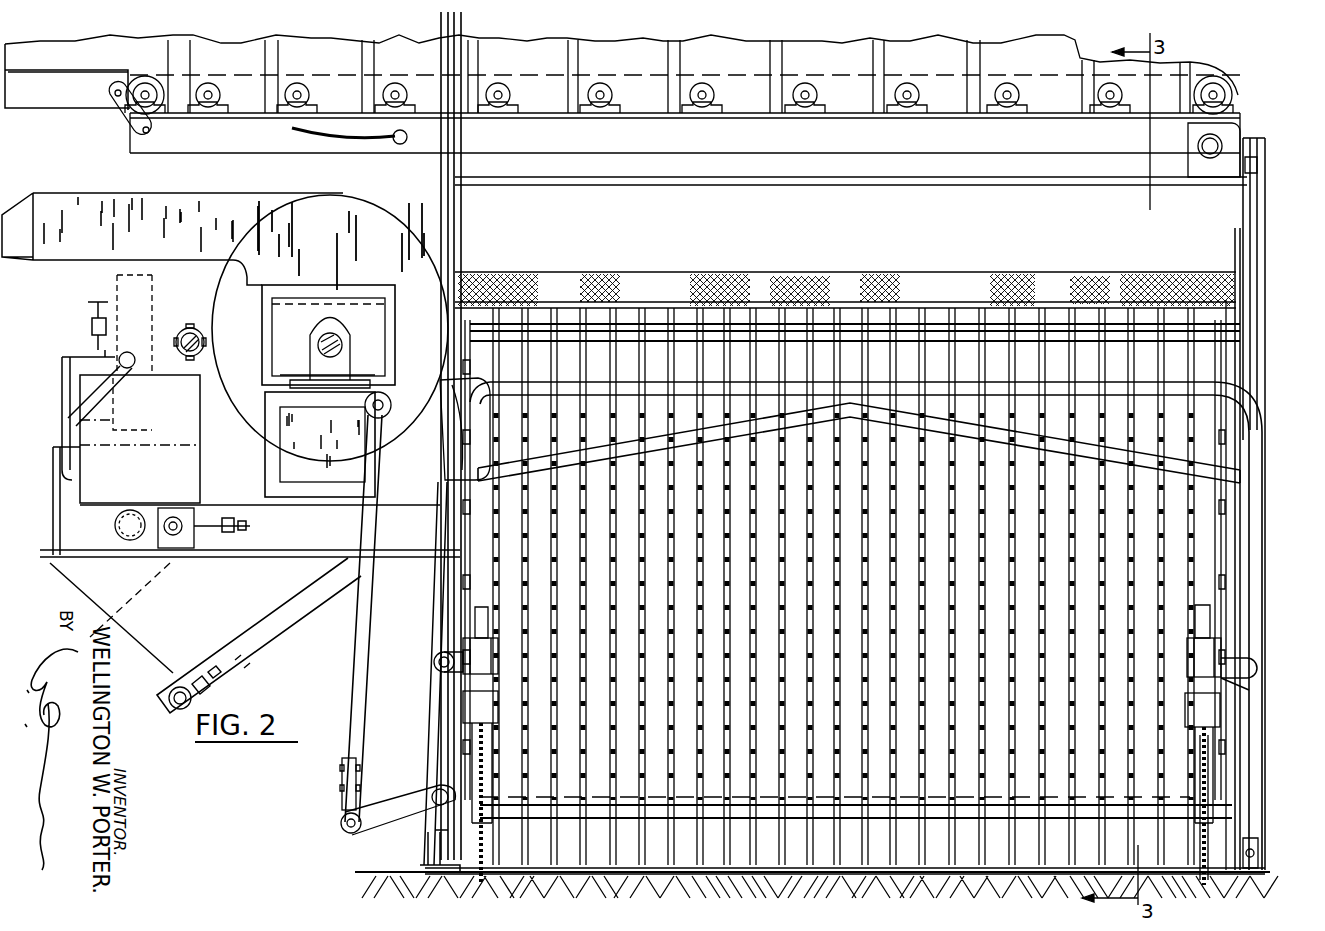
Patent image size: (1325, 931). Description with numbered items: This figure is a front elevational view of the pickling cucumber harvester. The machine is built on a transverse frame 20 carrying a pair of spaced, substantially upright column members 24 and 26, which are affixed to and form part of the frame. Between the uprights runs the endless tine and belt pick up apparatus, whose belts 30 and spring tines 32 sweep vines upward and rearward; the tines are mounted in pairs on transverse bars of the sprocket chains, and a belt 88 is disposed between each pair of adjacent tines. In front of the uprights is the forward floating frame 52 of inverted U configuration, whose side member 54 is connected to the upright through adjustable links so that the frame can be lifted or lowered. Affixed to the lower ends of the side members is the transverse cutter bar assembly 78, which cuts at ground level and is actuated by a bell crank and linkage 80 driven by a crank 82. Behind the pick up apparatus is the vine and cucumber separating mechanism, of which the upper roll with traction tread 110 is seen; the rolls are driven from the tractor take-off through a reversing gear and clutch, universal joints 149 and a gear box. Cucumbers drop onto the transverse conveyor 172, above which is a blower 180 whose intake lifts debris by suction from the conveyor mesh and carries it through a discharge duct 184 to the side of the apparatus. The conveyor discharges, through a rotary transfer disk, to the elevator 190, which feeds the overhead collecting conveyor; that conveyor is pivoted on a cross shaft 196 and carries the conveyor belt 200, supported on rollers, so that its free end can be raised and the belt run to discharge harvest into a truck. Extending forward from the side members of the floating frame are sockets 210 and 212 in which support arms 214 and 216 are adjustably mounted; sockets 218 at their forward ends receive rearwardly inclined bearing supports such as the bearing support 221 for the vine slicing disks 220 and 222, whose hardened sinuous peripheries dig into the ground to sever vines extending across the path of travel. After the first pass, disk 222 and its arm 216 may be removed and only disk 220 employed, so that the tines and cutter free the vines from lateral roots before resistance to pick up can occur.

The transverse frame 20 is at (283, 538).
The upright column member 24 is at (1260, 206).
The upright column member 26 is at (462, 195).
The belts 30 is at (680, 325).
The spring tines 32 is at (758, 822).
The forward floating frame 52 is at (1238, 402).
The side member 54 is at (1254, 552).
The transverse cutter bar assembly 78 is at (620, 868).
The bell crank and linkage 80 is at (428, 846).
The crank 82 is at (400, 265).
The belt 88 is at (1140, 576).
The upper roll with traction tread 110 is at (798, 292).
The universal joints 149 is at (183, 330).
The transverse conveyor 172 is at (388, 548).
The blower 180 is at (306, 206).
The discharge duct 184 is at (145, 202).
The elevator 190 is at (252, 655).
The cross shaft 196 is at (1216, 140).
The conveyor belt 200 is at (318, 78).
The socket 210 is at (1258, 666).
The socket 212 is at (432, 656).
The support arm 214 is at (1226, 672).
The support arm 216 is at (440, 665).
The sockets 218 is at (498, 670).
The vine slicing disk 220 is at (1208, 766).
The bearing support 221 is at (345, 757).
The vine slicing disk 222 is at (352, 795).